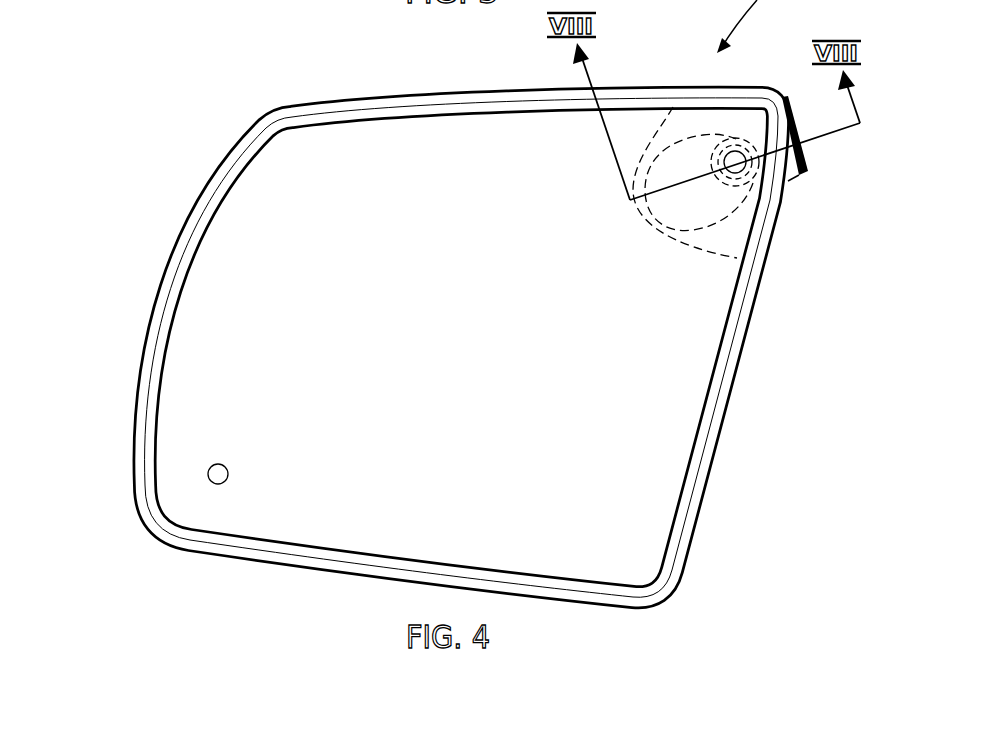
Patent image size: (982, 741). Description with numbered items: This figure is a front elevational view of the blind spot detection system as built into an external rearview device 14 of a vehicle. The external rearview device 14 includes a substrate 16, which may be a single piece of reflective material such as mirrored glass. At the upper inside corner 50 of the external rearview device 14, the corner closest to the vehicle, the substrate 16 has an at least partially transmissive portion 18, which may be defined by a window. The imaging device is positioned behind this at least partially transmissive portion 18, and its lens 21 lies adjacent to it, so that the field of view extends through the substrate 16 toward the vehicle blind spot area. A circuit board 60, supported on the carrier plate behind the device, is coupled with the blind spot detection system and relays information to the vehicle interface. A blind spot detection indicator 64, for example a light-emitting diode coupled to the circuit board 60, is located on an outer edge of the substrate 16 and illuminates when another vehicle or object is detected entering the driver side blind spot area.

The external rearview device 14 is at (176, 134).
The substrate 16 is at (473, 357).
The at least partially transmissive portion 18 is at (737, 227).
The lens 21 is at (728, 150).
The upper inside corner 50 is at (747, 125).
The circuit board 60 is at (812, 158).
The blind spot detection indicator 64 is at (218, 474).